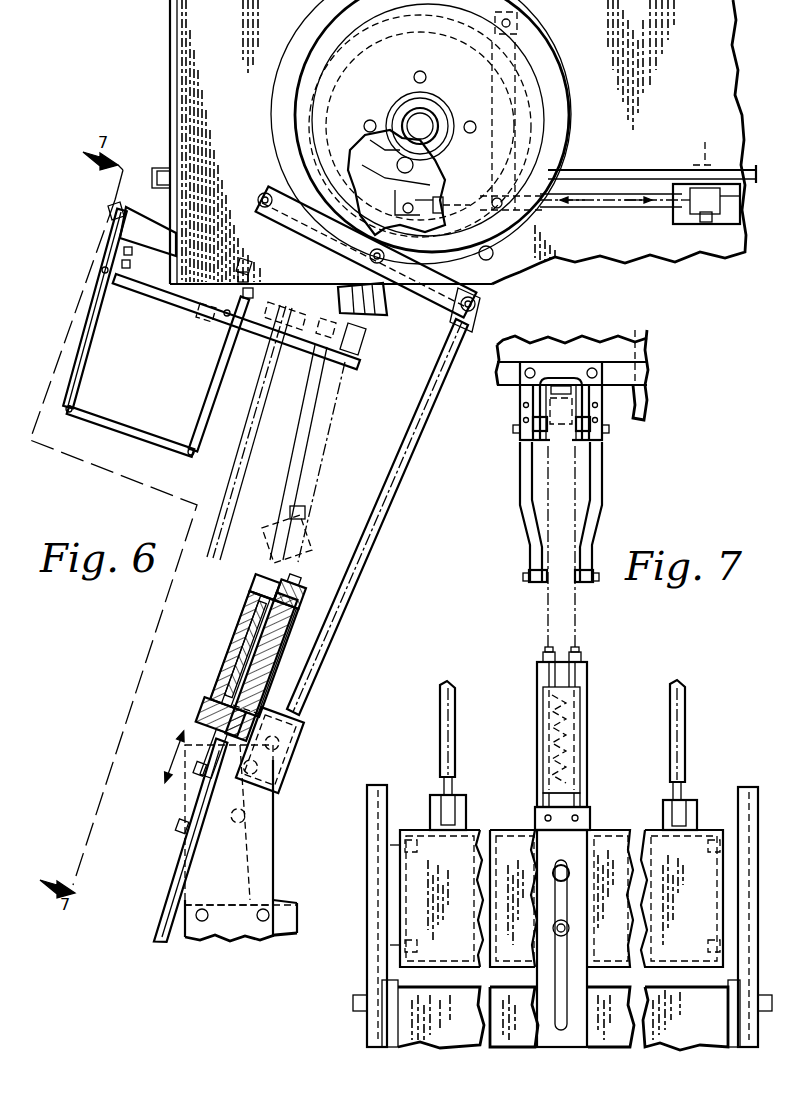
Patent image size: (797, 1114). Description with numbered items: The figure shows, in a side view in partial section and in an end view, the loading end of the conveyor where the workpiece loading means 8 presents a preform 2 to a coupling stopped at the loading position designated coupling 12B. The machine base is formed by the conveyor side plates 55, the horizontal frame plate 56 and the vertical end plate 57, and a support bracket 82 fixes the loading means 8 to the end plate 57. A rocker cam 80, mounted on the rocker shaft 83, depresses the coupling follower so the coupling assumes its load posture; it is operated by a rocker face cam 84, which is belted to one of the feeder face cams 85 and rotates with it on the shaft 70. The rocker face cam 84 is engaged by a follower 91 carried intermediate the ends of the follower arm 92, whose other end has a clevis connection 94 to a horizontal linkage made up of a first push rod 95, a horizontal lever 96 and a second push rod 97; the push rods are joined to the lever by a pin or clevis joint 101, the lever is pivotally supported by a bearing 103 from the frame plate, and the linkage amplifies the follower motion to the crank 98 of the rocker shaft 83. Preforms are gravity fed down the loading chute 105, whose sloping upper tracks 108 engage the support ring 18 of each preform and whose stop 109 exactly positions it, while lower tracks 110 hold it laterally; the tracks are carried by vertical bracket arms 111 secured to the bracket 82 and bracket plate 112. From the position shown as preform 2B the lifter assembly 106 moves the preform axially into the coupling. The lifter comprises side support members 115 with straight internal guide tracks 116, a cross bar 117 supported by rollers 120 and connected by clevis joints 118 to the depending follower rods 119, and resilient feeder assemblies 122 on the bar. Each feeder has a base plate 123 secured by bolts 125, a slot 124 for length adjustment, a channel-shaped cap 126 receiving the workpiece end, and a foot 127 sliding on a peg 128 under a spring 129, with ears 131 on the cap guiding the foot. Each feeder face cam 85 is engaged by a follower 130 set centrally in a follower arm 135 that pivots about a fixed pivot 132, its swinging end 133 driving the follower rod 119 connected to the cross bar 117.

In FIG. 6, the preform 2 is at (312, 318).
In FIG. 6, the preform position 2B is at (326, 447).
In FIG. 7, the preform position 2B is at (578, 628).
In FIG. 6, the loading means 8 is at (408, 491).
In FIG. 7, the loading means 8 is at (615, 470).
In FIG. 6, the coupling loading position 12B is at (378, 318).
In FIG. 6, the support ring 18 is at (250, 340).
In FIG. 7, the support ring 18 is at (557, 432).
In FIG. 6, the conveyor side plates 55 is at (193, 31).
In FIG. 6, the horizontal frame plate 56 is at (640, 176).
In FIG. 6, the vertical end plate 57 is at (172, 87).
In FIG. 6, the shaft 70 is at (427, 128).
In FIG. 6, the rocker cam 80 is at (396, 182).
In FIG. 6, the support bracket 82 is at (142, 229).
In FIG. 7, the support bracket 82 is at (641, 373).
In FIG. 6, the rocker shaft 83 is at (414, 165).
In FIG. 6, the rocker face cam 84 is at (314, 114).
In FIG. 6, the feeder face cam 85 is at (272, 161).
In FIG. 6, the follower 91 is at (508, 140).
In FIG. 6, the follower arm 92 is at (520, 40).
In FIG. 6, the clevis connection 94 is at (505, 165).
In FIG. 6, the first push rod 95 is at (572, 209).
In FIG. 6, the horizontal lever 96 is at (713, 190).
In FIG. 6, the second push rod 97 is at (440, 216).
In FIG. 6, the crank 98 is at (440, 198).
In FIG. 6, the pin or clevis joint 101 is at (705, 222).
In FIG. 6, the bearing 103 is at (699, 143).
In FIG. 6, the loading chute 105 is at (183, 317).
In FIG. 6, the lifter assembly 106 is at (302, 603).
In FIG. 7, the lifter assembly 106 is at (610, 675).
In FIG. 6, the upper tracks 108 is at (152, 291).
In FIG. 7, the upper tracks 108 is at (604, 441).
In FIG. 6, the stop 109 is at (366, 340).
In FIG. 7, the stop 109 is at (548, 392).
In FIG. 6, the lower tracks 110 is at (134, 430).
In FIG. 7, the lower tracks 110 is at (545, 583).
In FIG. 6, the vertical bracket arms 111 is at (94, 355).
In FIG. 7, the vertical bracket arms 111 is at (522, 518).
In FIG. 6, the bracket plate 112 is at (122, 208).
In FIG. 7, the bracket plate 112 is at (521, 390).
In FIG. 6, the side support members 115 is at (275, 856).
In FIG. 7, the side support members 115 is at (386, 785).
In FIG. 6, the guide tracks 116 is at (275, 802).
In FIG. 7, the guide tracks 116 is at (367, 905).
In FIG. 6, the cross bar 117 is at (250, 890).
In FIG. 7, the cross bar 117 is at (512, 830).
In FIG. 6, the clevis joints 118 is at (287, 756).
In FIG. 7, the clevis joints 118 is at (463, 805).
In FIG. 6, the handle 119 is at (301, 690).
In FIG. 7, the handle 119 is at (456, 728).
In FIG. 6, the rollers 120 is at (266, 774).
In FIG. 7, the rollers 120 is at (391, 834).
In FIG. 6, the workpiece feeder assembly 122 is at (222, 637).
In FIG. 7, the workpiece feeder assembly 122 is at (533, 690).
In FIG. 6, the base plate 123 is at (262, 652).
In FIG. 7, the base plate 123 is at (560, 1047).
In FIG. 6, the slot 124 is at (186, 863).
In FIG. 7, the slot 124 is at (567, 1020).
In FIG. 6, the bolts 125 is at (200, 830).
In FIG. 7, the bolts 125 is at (560, 866).
In FIG. 6, the cap 126 is at (284, 608).
In FIG. 7, the cap 126 is at (587, 662).
In FIG. 6, the foot 127 is at (221, 665).
In FIG. 7, the foot 127 is at (587, 700).
In FIG. 6, the peg 128 is at (212, 705).
In FIG. 7, the peg 128 is at (588, 800).
In FIG. 6, the spring 129 is at (246, 618).
In FIG. 7, the spring 129 is at (581, 729).
In FIG. 6, the follower 130 is at (370, 259).
In FIG. 6, the ears 131 is at (254, 585).
In FIG. 7, the ears 131 is at (537, 703).
In FIG. 6, the fixed pivot 132 is at (258, 198).
In FIG. 6, the swinging end 133 is at (494, 289).
In FIG. 6, the follower arm 135 is at (288, 218).